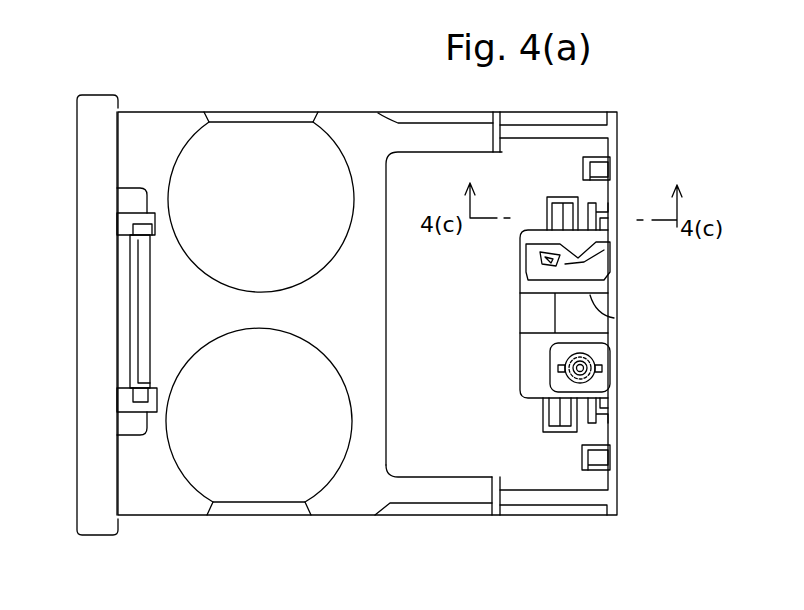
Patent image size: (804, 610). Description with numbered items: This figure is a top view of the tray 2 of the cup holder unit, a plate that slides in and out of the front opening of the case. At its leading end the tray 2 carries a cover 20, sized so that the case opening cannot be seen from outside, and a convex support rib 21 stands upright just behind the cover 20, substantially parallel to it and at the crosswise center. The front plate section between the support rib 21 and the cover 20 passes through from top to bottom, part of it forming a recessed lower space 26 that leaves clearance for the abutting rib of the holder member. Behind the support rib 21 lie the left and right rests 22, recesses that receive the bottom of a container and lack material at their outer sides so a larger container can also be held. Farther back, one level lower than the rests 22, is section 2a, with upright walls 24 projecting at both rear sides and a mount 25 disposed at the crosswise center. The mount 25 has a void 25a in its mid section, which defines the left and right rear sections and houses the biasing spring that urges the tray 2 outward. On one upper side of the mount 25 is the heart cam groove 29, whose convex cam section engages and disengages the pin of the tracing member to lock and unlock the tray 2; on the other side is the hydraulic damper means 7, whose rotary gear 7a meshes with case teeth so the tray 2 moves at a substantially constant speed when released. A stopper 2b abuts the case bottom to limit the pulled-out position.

The tray 2 is at (165, 110).
The section 2a is at (428, 157).
The stopper 2b is at (603, 168).
The damper means 7 is at (597, 358).
The rotary gear 7a is at (592, 378).
The cover 20 is at (88, 190).
The support rib 21 is at (142, 333).
The rests 22 is at (260, 143).
The upright walls 24 is at (571, 130).
The mount 25 is at (530, 358).
The void 25a is at (614, 318).
The lower space 26 is at (118, 276).
The heart cam groove 29 is at (565, 264).